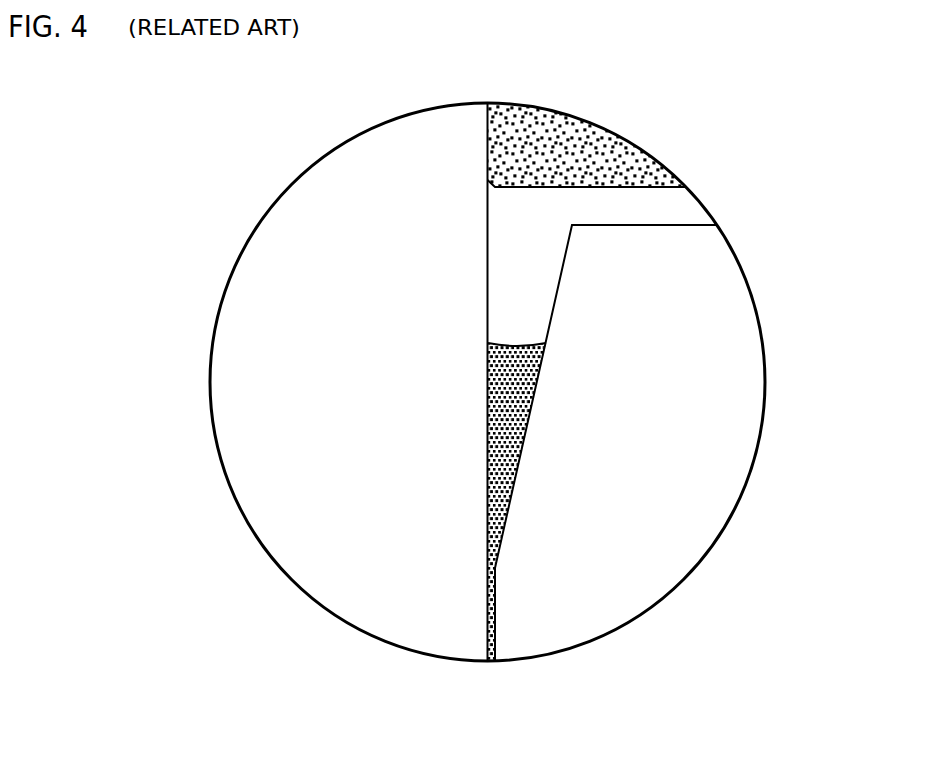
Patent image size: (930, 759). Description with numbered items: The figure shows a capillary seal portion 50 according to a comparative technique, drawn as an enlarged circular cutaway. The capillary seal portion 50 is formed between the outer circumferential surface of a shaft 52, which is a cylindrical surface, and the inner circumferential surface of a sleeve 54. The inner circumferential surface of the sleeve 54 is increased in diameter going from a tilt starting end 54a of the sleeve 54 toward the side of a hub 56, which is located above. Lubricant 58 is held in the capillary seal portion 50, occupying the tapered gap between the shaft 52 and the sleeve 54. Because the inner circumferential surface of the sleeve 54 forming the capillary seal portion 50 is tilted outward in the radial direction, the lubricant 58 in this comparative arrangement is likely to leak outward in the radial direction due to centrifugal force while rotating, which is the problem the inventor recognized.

The capillary seal portion 50 is at (509, 458).
The shaft 52 is at (340, 571).
The sleeve 54 is at (688, 483).
The tilt starting end 54a is at (495, 577).
The hub 56 is at (578, 153).
The lubricant 58 is at (500, 505).